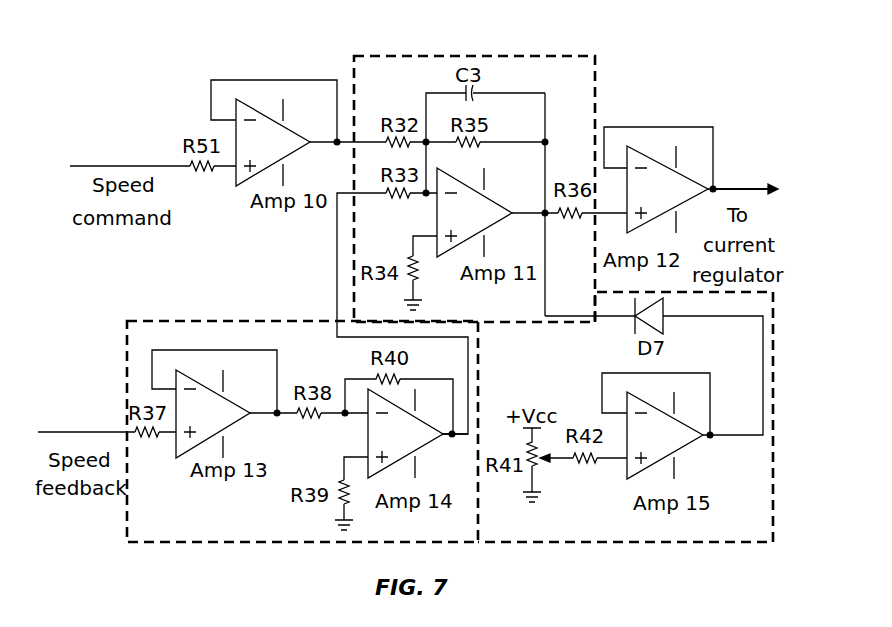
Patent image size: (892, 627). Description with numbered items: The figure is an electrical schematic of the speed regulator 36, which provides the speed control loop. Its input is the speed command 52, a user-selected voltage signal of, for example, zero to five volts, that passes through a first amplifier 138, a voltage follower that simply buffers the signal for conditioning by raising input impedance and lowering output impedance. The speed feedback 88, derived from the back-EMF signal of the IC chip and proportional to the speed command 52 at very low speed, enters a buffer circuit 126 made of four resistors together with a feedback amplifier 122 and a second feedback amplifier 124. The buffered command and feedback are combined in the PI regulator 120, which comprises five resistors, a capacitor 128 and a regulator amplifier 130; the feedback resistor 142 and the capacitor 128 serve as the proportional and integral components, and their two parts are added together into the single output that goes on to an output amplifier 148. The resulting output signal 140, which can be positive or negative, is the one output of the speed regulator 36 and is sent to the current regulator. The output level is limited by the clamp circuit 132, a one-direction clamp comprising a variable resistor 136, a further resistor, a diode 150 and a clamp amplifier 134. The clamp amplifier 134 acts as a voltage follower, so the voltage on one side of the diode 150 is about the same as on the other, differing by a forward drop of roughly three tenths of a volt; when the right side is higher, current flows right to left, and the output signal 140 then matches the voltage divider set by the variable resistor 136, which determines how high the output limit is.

The speed regulator 36 is at (721, 75).
The speed command 52 is at (120, 165).
The speed feedback 88 is at (79, 431).
The PI regulator 120 is at (596, 90).
The amplifier Amp 13 122 is at (224, 404).
The amplifier Amp 14 124 is at (406, 434).
The buffer circuit 126 is at (127, 366).
The capacitor C3 128 is at (476, 92).
The amplifier Amp 11 130 is at (485, 212).
The clamp circuit 132 is at (664, 546).
The amplifier Amp 15 134 is at (655, 426).
The resistor R41 136 is at (541, 470).
The amplifier Amp 10 138 is at (298, 133).
The output signal 140 is at (715, 189).
The resistor R35 142 is at (478, 145).
The amplifier Amp 12 148 is at (660, 180).
The diode D7 150 is at (656, 327).